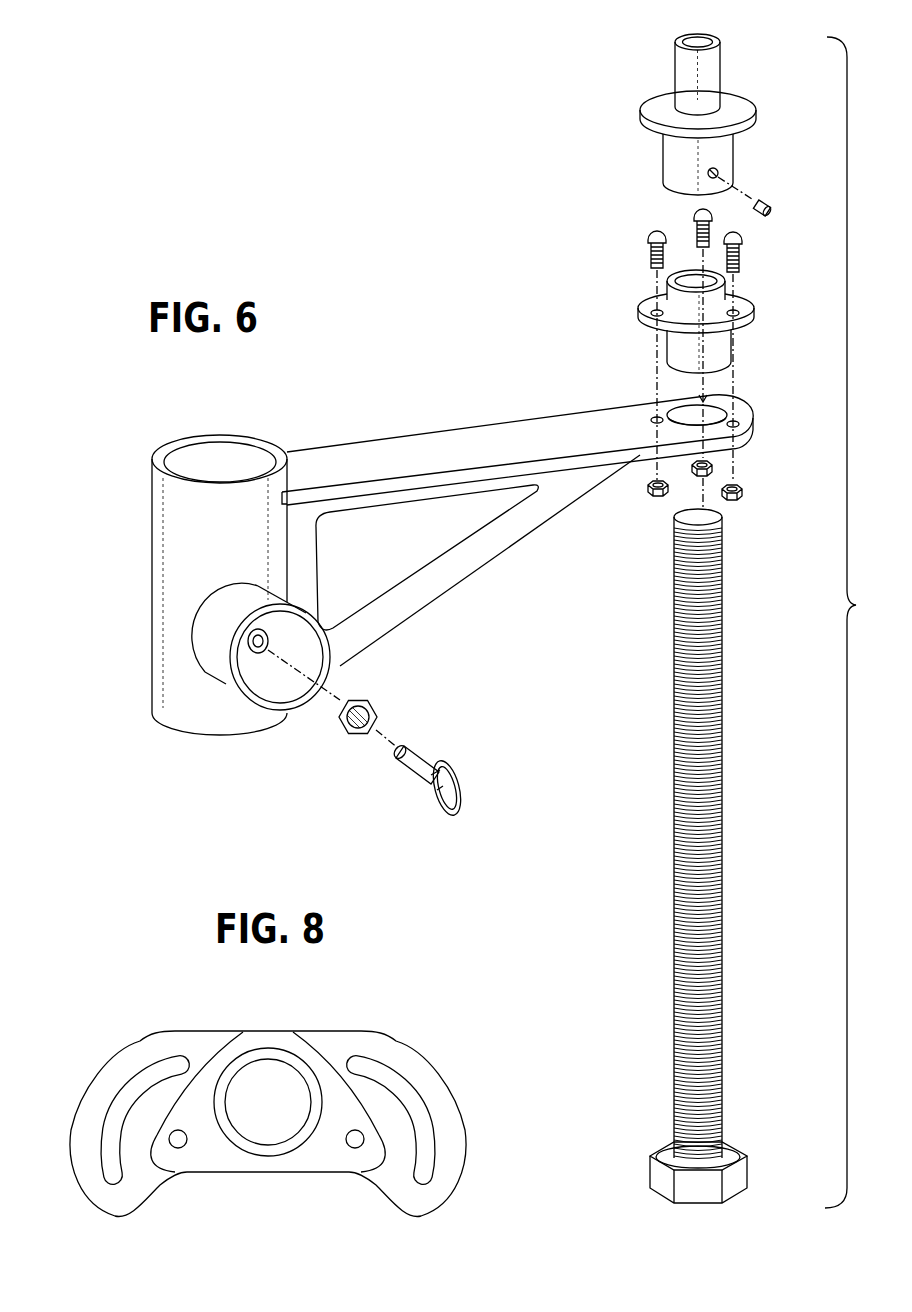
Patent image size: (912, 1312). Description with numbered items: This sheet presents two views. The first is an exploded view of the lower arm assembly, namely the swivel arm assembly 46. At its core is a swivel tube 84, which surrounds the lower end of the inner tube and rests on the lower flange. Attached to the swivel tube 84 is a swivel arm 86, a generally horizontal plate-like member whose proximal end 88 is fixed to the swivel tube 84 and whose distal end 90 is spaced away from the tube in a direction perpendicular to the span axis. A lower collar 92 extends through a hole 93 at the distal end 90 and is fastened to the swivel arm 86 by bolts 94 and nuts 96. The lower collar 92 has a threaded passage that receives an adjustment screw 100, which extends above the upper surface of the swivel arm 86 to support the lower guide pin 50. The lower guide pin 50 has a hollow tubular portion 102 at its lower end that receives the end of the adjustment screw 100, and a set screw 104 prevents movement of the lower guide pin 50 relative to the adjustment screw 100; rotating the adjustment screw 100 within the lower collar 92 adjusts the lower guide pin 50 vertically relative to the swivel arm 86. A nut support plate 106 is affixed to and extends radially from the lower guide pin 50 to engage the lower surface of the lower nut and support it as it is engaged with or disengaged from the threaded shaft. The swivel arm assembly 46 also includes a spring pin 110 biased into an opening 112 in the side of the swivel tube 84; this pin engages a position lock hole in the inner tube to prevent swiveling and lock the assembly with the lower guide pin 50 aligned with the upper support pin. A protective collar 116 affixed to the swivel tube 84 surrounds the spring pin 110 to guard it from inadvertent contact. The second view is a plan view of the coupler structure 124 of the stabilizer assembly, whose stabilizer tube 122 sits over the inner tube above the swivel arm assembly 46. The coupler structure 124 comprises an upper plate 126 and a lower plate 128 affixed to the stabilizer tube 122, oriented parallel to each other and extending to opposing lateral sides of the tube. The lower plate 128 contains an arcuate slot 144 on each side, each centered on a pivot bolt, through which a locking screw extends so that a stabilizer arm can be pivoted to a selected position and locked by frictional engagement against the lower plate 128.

In FIG. 6, the swivel arm assembly 46 is at (453, 379).
In FIG. 6, the lower guide pin 50 is at (678, 68).
In FIG. 6, the swivel tube 84 is at (160, 563).
In FIG. 6, the swivel arm 86 is at (550, 506).
In FIG. 6, the proximal end 88 is at (305, 450).
In FIG. 6, the distal end 90 is at (598, 495).
In FIG. 6, the lower collar 92 is at (650, 294).
In FIG. 6, the hole 93 is at (717, 413).
In FIG. 6, the bolts 94 is at (652, 250).
In FIG. 6, the nuts 96 is at (712, 460).
In FIG. 6, the adjustment screw 100 is at (712, 832).
In FIG. 6, the hollow tubular portion 102 is at (667, 163).
In FIG. 6, the set screw 104 is at (760, 203).
In FIG. 6, the nut support plate 106 is at (655, 110).
In FIG. 6, the spring pin 110 is at (420, 813).
In FIG. 6, the opening 112 is at (263, 652).
In FIG. 6, the protective collar 116 is at (211, 684).
In FIG. 8, the stabilizer tube 122 is at (248, 1053).
In FIG. 8, the coupler structure 124 is at (252, 1087).
In FIG. 8, the upper plate 126 is at (217, 1072).
In FIG. 8, the lower plate 128 is at (145, 1045).
In FIG. 8, the arcuate slot 144 is at (106, 1118).